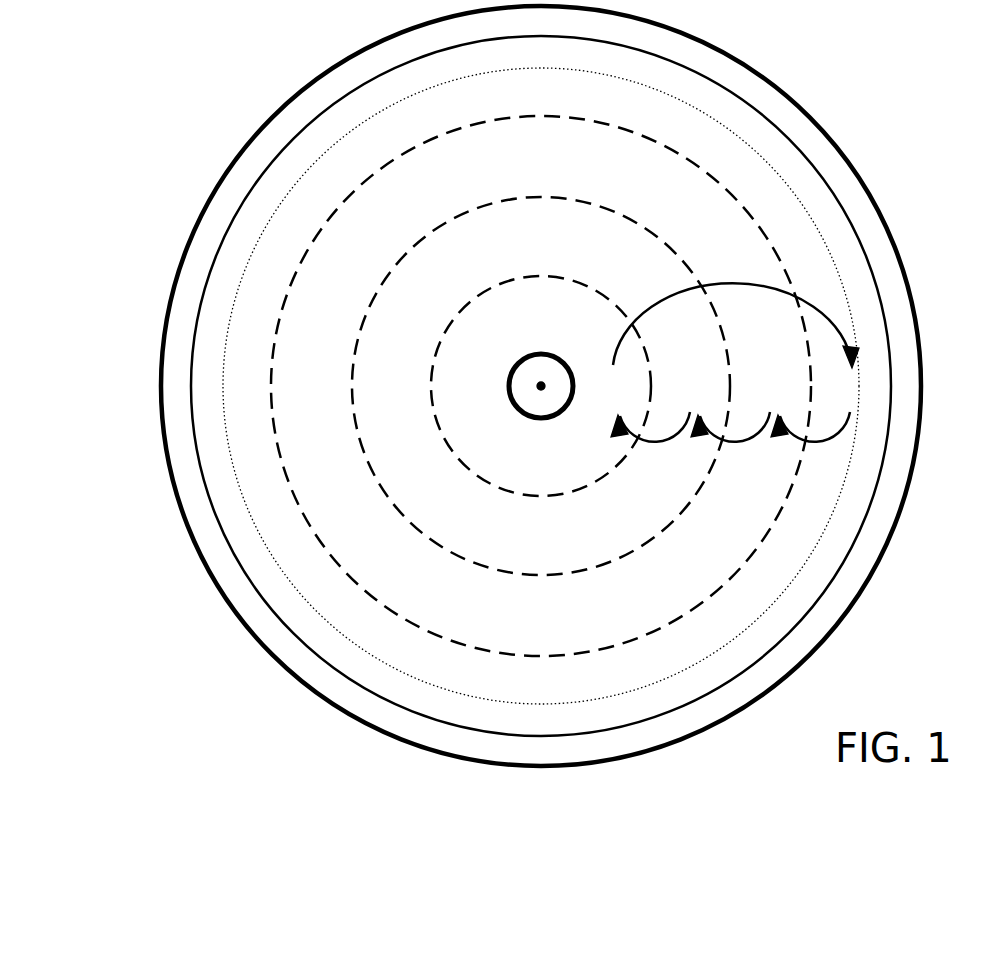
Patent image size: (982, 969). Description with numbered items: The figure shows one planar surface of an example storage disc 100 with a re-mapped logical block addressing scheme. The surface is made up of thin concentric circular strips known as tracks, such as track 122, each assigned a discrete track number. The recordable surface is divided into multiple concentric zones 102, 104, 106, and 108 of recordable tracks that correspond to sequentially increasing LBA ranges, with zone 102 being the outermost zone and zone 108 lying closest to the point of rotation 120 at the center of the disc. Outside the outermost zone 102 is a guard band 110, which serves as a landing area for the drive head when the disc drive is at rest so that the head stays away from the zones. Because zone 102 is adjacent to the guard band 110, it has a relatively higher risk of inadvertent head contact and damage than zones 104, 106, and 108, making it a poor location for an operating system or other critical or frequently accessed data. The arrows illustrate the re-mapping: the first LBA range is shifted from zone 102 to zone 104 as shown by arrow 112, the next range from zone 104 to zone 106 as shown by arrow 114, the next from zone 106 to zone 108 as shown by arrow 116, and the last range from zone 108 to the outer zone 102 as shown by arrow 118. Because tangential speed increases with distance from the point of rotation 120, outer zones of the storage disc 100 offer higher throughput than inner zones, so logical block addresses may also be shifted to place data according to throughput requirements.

The storage disc 100 is at (150, 94).
The zone 102 is at (870, 411).
The zone 104 is at (789, 411).
The zone 106 is at (710, 411).
The zone 108 is at (632, 411).
The guard band 110 is at (858, 179).
The arrow 112 is at (815, 452).
The arrow 114 is at (730, 452).
The arrow 116 is at (635, 452).
The arrow 118 is at (745, 275).
The point of rotation 120 is at (542, 386).
The track 122 is at (710, 117).